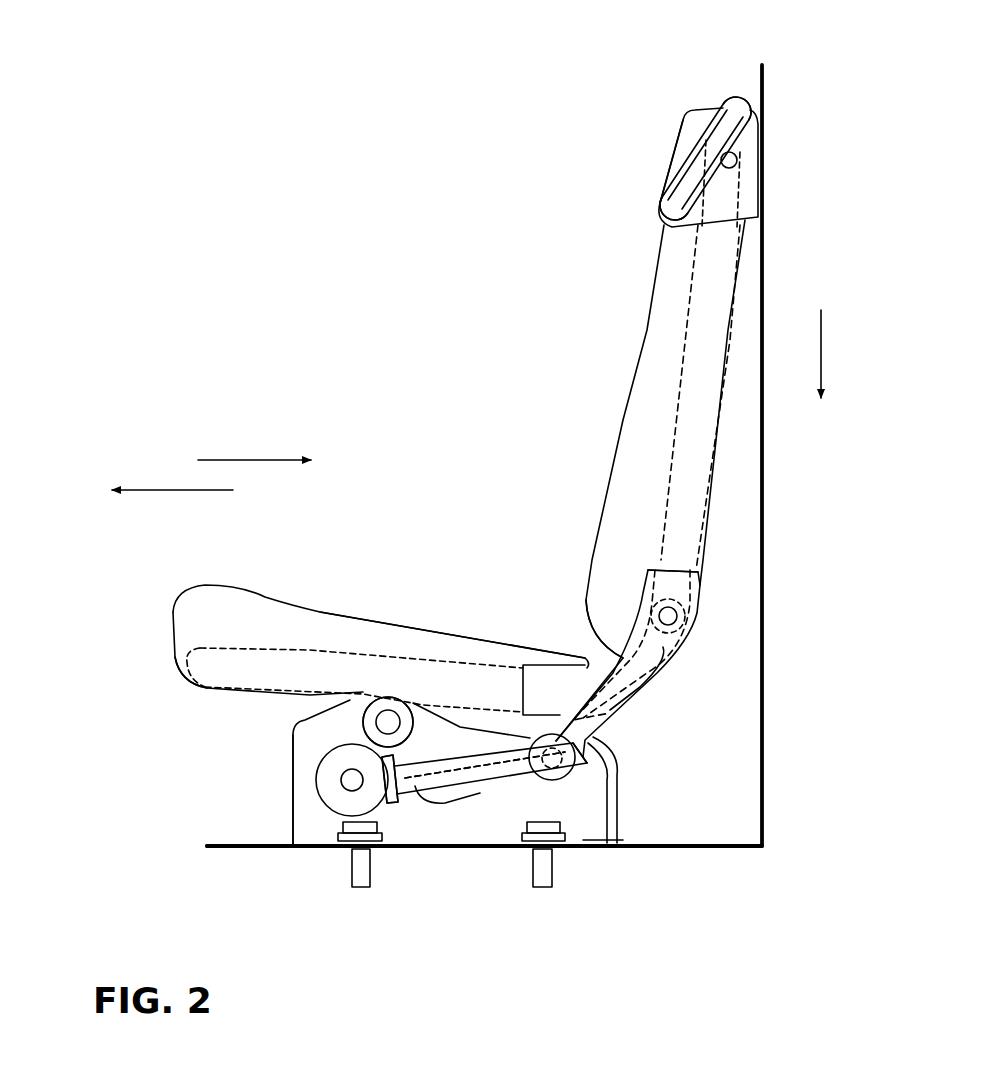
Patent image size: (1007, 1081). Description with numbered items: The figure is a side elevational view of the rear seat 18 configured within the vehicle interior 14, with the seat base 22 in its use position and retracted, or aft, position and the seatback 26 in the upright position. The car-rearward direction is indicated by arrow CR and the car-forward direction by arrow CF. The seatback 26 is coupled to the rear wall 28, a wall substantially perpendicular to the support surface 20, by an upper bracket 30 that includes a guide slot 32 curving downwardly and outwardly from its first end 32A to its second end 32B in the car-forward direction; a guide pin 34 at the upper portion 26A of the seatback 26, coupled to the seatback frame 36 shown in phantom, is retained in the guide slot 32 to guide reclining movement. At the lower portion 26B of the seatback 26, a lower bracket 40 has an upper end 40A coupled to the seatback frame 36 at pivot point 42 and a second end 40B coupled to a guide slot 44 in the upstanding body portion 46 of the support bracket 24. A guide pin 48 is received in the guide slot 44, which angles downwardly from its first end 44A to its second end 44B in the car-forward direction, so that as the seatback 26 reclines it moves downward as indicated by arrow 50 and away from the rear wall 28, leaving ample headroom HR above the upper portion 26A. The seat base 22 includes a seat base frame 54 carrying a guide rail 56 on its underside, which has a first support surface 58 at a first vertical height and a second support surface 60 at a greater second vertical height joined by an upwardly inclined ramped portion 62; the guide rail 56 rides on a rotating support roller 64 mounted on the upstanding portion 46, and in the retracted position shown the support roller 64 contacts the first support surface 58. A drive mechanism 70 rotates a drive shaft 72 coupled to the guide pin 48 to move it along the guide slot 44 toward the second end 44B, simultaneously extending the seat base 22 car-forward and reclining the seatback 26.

The vehicle interior 14 is at (316, 368).
The rear seat 18 is at (535, 283).
The support surface 20 is at (228, 845).
The seat base 22 is at (158, 600).
The support bracket 24 is at (250, 732).
The seatback 26 is at (583, 425).
The upper portion of the seatback 26A is at (683, 133).
The lower portion of the seatback 26B is at (603, 628).
The rear wall 28 is at (763, 736).
The upper bracket 30 is at (752, 230).
The guide slot 32 is at (722, 207).
The first end of the guide slot 32A is at (750, 108).
The second end of the guide slot 32B is at (660, 213).
The guide pin 34 is at (738, 160).
The seatback frame 36 is at (690, 483).
The lower bracket 40 is at (663, 647).
The upper end of the lower bracket 40A is at (683, 620).
The second end of the lower bracket 40B is at (615, 768).
The pivot point 42 is at (677, 621).
The guide slot 44 is at (462, 795).
The first end of the guide slot 44A is at (600, 765).
The second end of the guide slot 44B is at (433, 805).
The upstanding body portion 46 is at (320, 823).
The guide pin 48 is at (567, 763).
The arrow 50 is at (841, 371).
The seat base frame 54 is at (222, 668).
The guide rail 56 is at (360, 694).
The first support surface 58 is at (383, 693).
The second support surface 60 is at (492, 668).
The ramped portion 62 is at (423, 680).
The support roller 64 is at (358, 725).
The drive mechanism 70 is at (312, 806).
The drive shaft 72 is at (490, 768).
The headroom HR is at (720, 93).
The arrow CR is at (240, 460).
The arrow CF is at (150, 490).